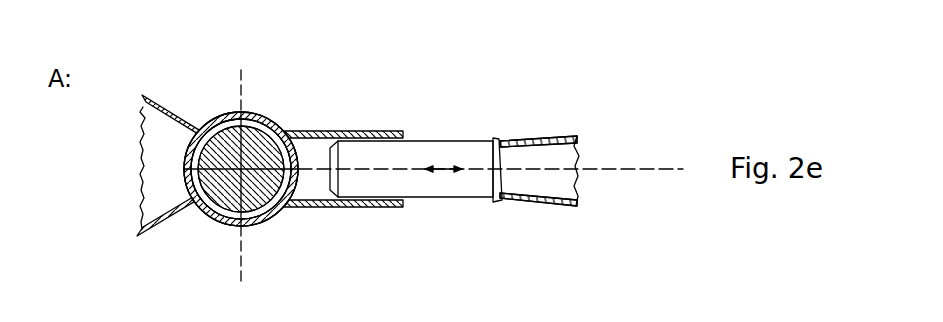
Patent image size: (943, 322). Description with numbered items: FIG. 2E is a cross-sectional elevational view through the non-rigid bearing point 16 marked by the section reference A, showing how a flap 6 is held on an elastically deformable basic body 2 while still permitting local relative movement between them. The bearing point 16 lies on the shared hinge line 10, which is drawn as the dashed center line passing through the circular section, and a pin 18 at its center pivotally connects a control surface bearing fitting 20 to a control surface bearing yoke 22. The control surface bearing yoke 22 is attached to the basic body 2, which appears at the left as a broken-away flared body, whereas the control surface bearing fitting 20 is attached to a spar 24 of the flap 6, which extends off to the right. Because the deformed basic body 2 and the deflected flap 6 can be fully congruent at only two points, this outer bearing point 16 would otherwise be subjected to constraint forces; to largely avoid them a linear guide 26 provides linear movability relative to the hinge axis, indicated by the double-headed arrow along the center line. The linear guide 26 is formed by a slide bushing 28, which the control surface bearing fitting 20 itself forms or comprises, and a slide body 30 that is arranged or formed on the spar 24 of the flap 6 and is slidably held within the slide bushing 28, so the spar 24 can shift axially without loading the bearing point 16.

The basic body 2 is at (147, 123).
The flap 6 is at (546, 120).
The hinge line 10 is at (236, 163).
The bearing point 16 is at (255, 100).
The pin 18 is at (203, 122).
The control surface bearing fitting 20 is at (337, 132).
The control surface bearing yoke 22 is at (222, 222).
The spar 24 is at (538, 160).
The linear guide 26 is at (428, 125).
The slide bushing 28 is at (303, 185).
The slide body 30 is at (470, 153).